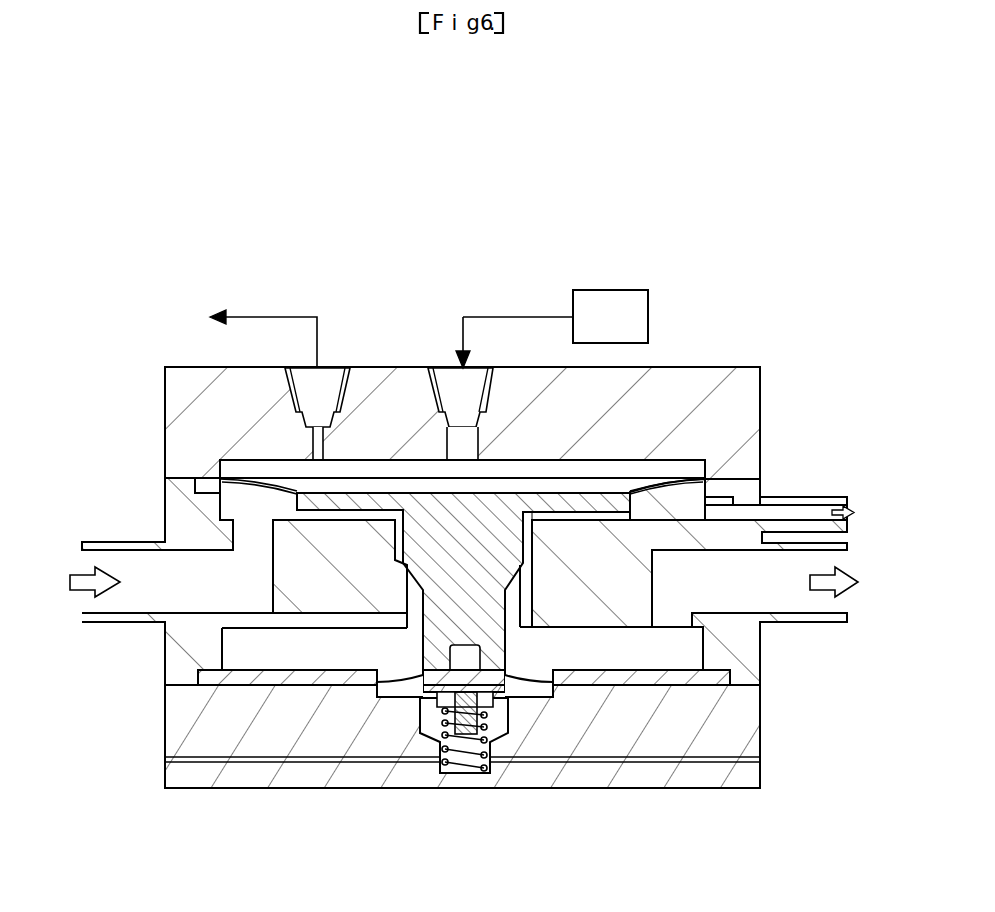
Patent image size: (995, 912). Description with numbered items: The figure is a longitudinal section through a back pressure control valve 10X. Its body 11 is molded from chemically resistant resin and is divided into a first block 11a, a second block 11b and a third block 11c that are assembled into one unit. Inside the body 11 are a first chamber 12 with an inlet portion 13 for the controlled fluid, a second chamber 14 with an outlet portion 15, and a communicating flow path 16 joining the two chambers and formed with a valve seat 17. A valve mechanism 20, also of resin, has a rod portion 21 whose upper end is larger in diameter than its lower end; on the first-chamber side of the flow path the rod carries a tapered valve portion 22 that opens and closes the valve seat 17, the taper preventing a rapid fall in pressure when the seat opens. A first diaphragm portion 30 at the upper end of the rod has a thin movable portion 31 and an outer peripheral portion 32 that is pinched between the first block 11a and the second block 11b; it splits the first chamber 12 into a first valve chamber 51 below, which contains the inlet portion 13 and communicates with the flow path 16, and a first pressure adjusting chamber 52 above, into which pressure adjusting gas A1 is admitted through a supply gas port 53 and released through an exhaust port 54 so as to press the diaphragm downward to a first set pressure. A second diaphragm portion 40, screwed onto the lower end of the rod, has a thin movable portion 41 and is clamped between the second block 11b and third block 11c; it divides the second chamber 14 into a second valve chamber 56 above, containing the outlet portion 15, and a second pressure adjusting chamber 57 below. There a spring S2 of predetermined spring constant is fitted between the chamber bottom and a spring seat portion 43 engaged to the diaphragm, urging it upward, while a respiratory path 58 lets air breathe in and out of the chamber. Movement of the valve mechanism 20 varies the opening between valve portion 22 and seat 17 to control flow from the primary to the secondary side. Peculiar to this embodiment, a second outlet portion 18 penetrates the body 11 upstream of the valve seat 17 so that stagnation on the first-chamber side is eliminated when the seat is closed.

The back pressure control valve 10X is at (477, 528).
The body 11 is at (482, 524).
The first block 11a is at (177, 398).
The second block 11b is at (490, 526).
The third block 11c is at (416, 752).
The first chamber 12 is at (218, 680).
The inlet portion 13 is at (225, 562).
The second chamber 14 is at (630, 660).
The outlet portion 15 is at (667, 630).
The communicating flow path 16 is at (418, 652).
The valve seat 17 is at (405, 578).
The second outlet portion 18 is at (803, 512).
The valve mechanism 20 is at (420, 702).
The rod portion 21 is at (415, 535).
The valve portion 22 is at (518, 570).
The first diaphragm portion 30 is at (525, 454).
The thin movable portion 31 is at (652, 481).
The outer peripheral portion 32 is at (732, 486).
The second diaphragm portion 40 is at (686, 690).
The thin movable portion 41 is at (485, 694).
The spring seat portion 43 is at (487, 703).
The first valve chamber 51 is at (562, 517).
The first pressure adjusting chamber 52 is at (495, 472).
The supply gas port 53 is at (460, 388).
The exhaust port 54 is at (318, 388).
The second valve chamber 56 is at (620, 637).
The second pressure adjusting chamber 57 is at (407, 695).
The respiratory path 58 is at (197, 757).
The pressure adjusting gas A1 is at (603, 308).
The spring S2 is at (462, 768).